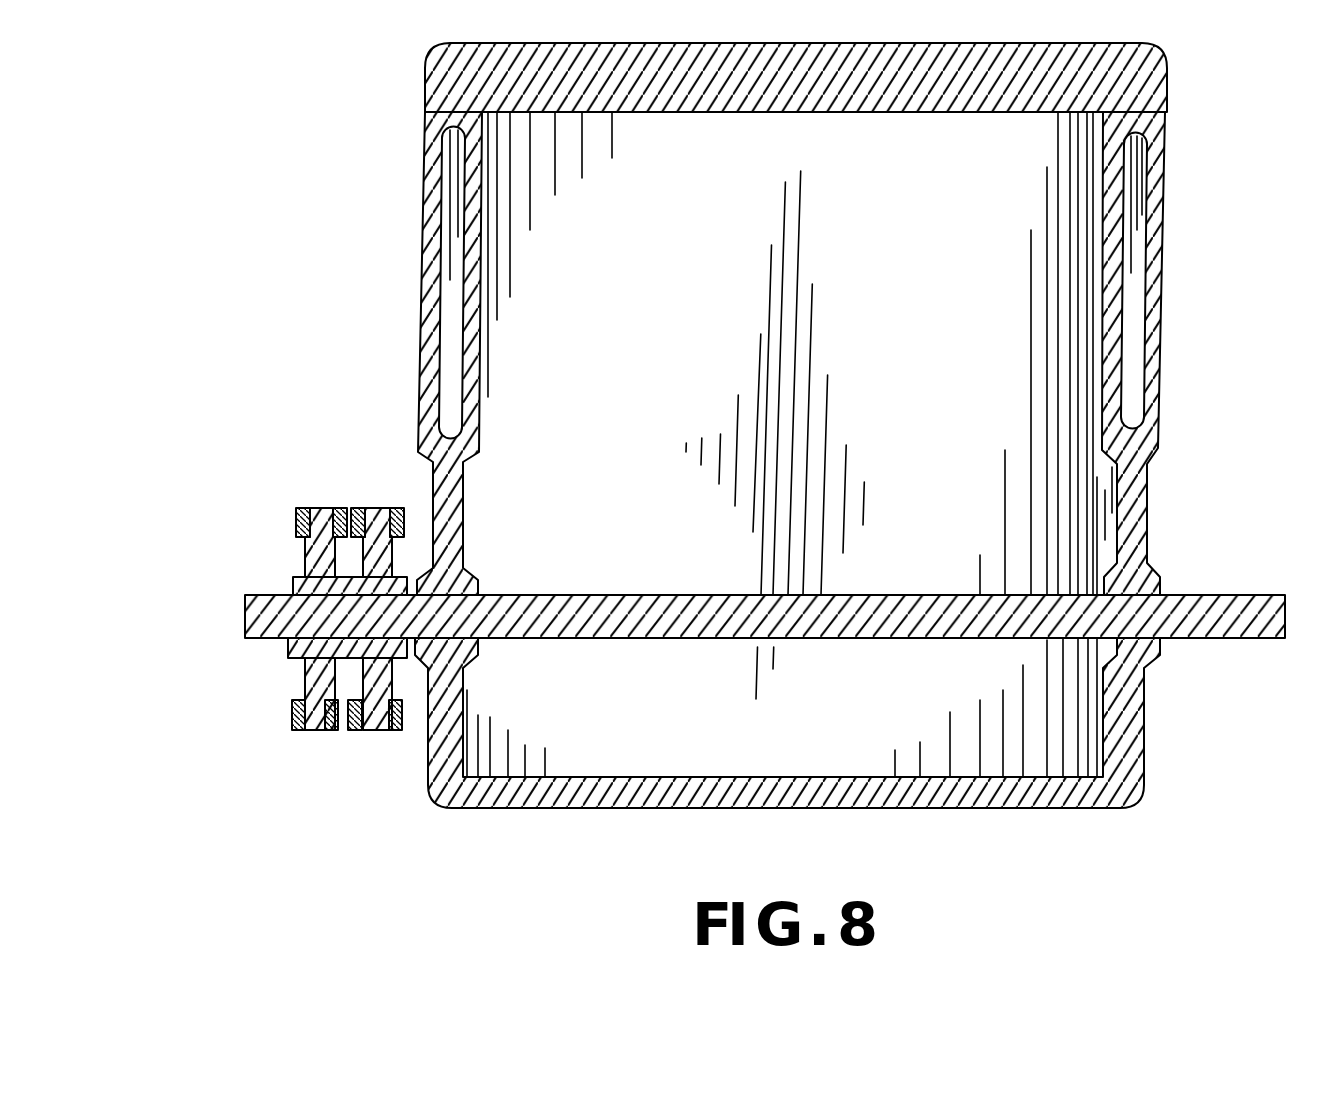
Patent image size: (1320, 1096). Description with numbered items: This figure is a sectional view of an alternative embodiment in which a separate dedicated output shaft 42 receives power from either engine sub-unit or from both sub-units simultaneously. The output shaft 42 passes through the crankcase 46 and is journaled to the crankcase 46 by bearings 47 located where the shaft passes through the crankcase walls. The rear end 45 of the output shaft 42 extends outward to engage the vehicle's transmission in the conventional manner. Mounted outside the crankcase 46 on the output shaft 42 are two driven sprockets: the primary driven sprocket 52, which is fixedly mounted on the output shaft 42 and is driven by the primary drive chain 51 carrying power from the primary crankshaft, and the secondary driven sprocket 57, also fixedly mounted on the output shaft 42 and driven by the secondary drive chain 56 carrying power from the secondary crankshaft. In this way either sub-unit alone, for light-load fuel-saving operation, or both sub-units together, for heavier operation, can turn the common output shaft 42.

The output shaft 42 is at (612, 594).
The rear end 45 is at (1228, 594).
The crankcase 46 is at (1144, 740).
The bearings 47 is at (478, 656).
The primary drive chain 51 is at (355, 508).
The primary driven sprocket 52 is at (383, 509).
The secondary drive chain 56 is at (297, 523).
The secondary driven sprocket 57 is at (305, 553).